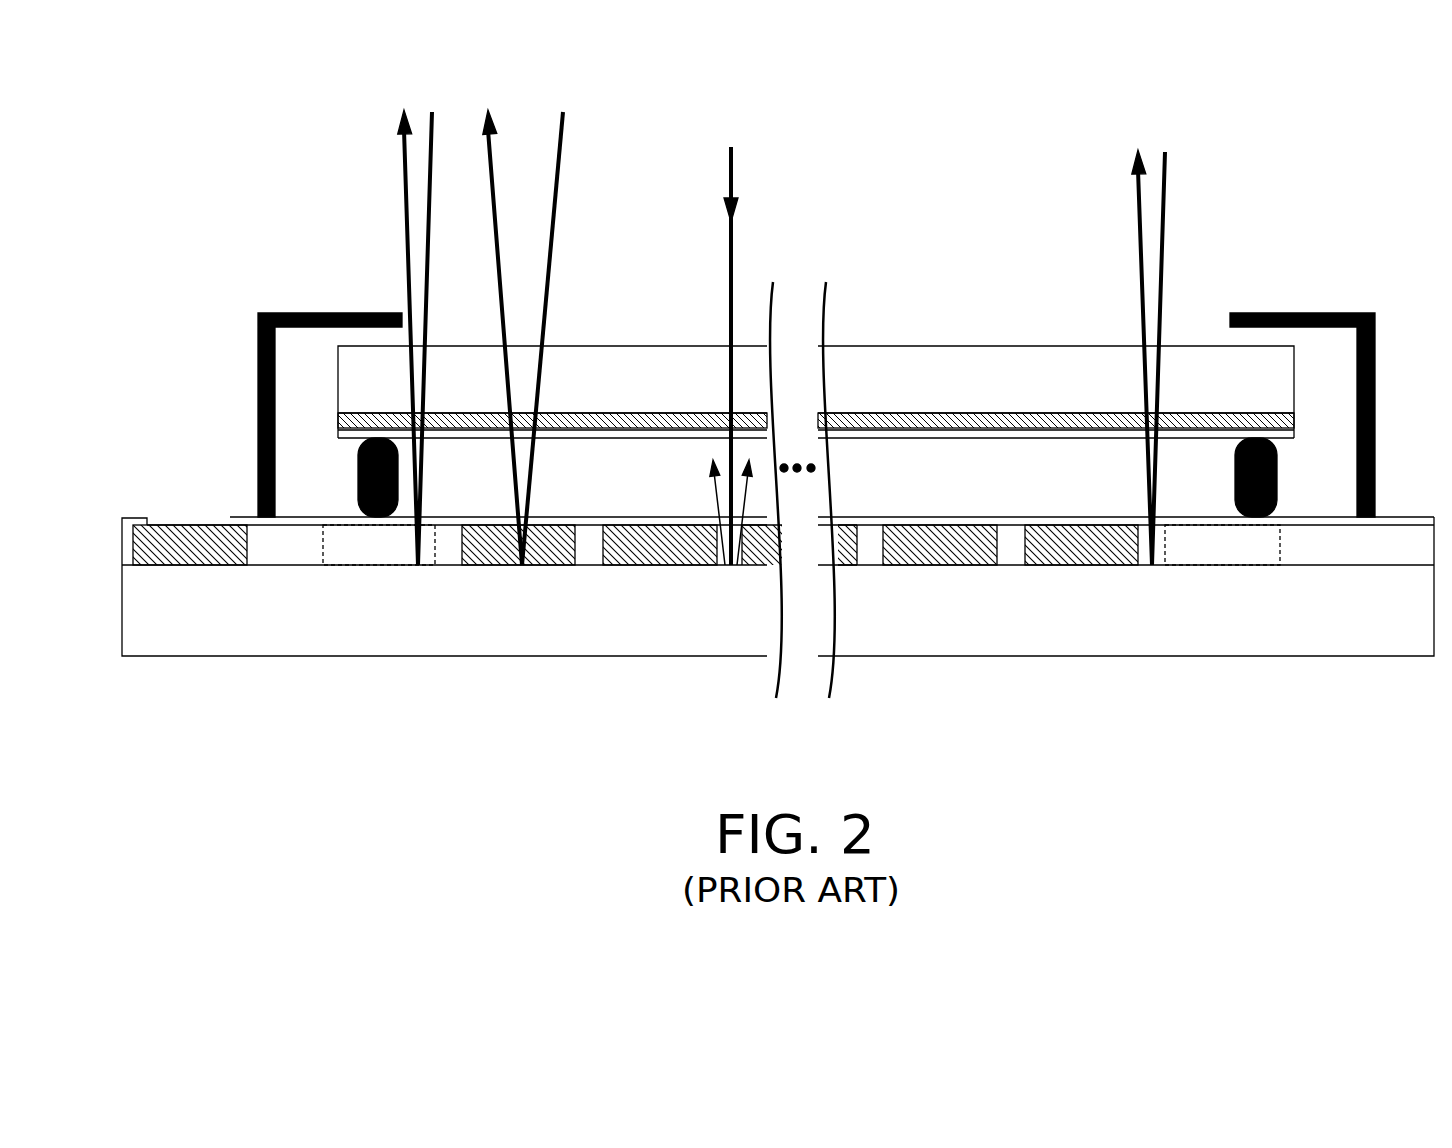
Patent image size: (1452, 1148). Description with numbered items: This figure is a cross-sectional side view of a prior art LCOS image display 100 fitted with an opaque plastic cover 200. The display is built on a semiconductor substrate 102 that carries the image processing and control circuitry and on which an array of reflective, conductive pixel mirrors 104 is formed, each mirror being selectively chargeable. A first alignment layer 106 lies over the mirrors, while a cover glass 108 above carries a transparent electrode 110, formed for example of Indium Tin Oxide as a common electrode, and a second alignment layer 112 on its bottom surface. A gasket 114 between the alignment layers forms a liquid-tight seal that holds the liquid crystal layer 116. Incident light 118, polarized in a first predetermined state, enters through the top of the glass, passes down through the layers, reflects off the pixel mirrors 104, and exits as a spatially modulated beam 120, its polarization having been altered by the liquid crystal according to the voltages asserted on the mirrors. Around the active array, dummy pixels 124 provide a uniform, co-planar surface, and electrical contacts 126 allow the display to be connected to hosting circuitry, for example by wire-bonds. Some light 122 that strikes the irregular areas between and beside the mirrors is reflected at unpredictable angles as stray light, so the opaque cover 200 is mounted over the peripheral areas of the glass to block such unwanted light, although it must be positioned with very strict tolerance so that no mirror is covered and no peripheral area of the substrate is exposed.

The LCOS image display 100 is at (190, 166).
The semiconductor substrate 102 is at (1236, 640).
The pixel mirrors 104 is at (487, 567).
The first alignment layer 106 is at (1397, 520).
The cover glass 108 is at (355, 360).
The transparent electrode 110 is at (352, 421).
The second alignment layer 112 is at (352, 435).
The gasket 114 is at (360, 480).
The liquid crystal layer 116 is at (1090, 465).
The incident light 118 is at (565, 165).
The spatially modulated beam 120 is at (496, 222).
The stray light 122 is at (728, 283).
The dummy pixels 124 is at (370, 566).
The electrical contacts 126 is at (188, 545).
The opaque plastic cover 200 is at (257, 333).